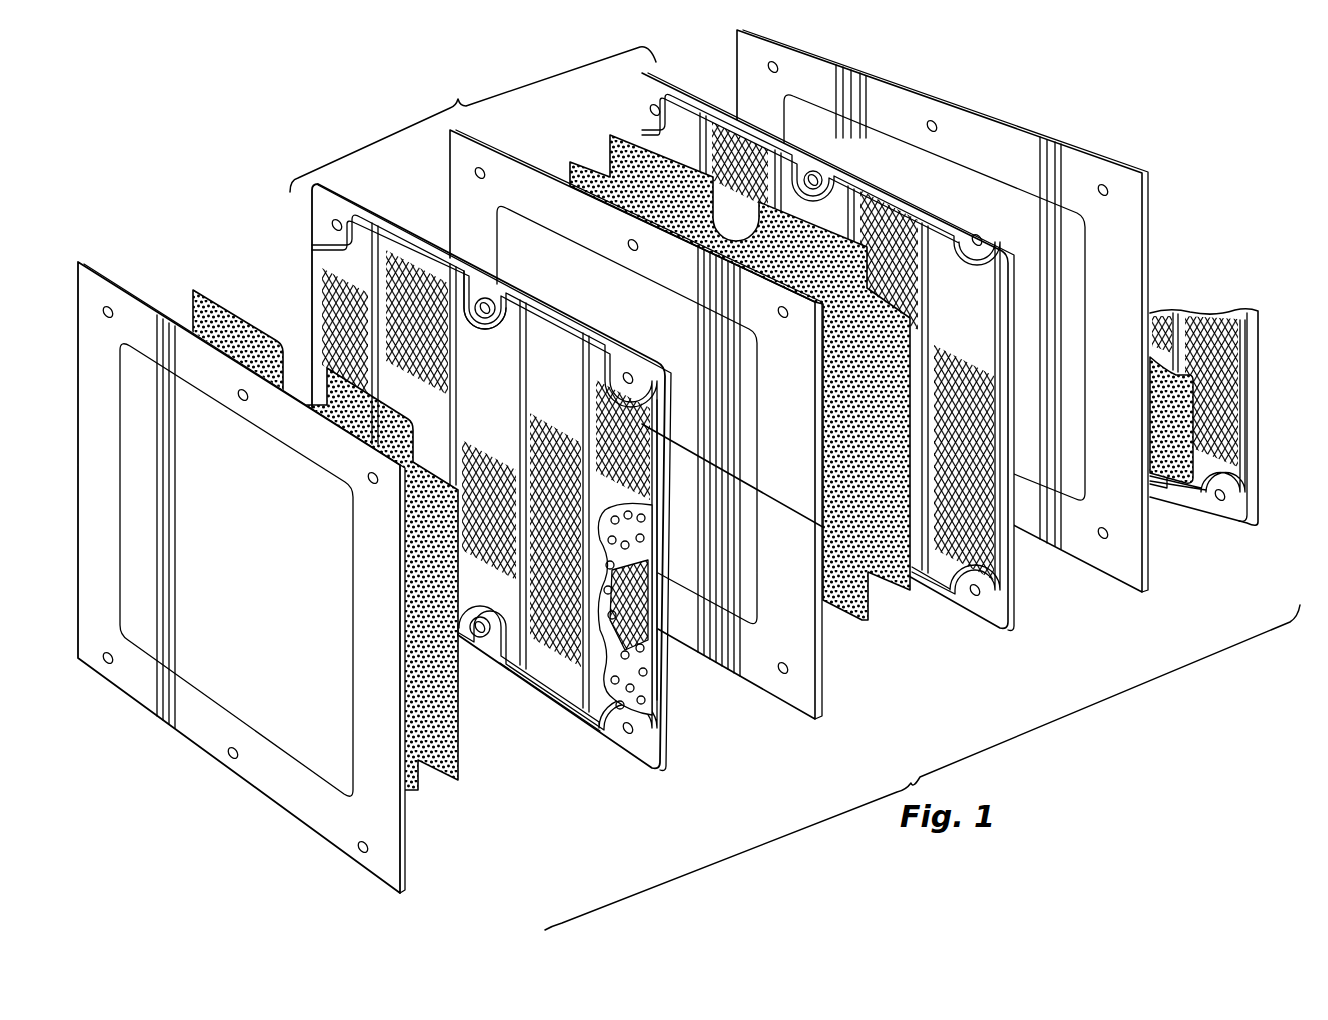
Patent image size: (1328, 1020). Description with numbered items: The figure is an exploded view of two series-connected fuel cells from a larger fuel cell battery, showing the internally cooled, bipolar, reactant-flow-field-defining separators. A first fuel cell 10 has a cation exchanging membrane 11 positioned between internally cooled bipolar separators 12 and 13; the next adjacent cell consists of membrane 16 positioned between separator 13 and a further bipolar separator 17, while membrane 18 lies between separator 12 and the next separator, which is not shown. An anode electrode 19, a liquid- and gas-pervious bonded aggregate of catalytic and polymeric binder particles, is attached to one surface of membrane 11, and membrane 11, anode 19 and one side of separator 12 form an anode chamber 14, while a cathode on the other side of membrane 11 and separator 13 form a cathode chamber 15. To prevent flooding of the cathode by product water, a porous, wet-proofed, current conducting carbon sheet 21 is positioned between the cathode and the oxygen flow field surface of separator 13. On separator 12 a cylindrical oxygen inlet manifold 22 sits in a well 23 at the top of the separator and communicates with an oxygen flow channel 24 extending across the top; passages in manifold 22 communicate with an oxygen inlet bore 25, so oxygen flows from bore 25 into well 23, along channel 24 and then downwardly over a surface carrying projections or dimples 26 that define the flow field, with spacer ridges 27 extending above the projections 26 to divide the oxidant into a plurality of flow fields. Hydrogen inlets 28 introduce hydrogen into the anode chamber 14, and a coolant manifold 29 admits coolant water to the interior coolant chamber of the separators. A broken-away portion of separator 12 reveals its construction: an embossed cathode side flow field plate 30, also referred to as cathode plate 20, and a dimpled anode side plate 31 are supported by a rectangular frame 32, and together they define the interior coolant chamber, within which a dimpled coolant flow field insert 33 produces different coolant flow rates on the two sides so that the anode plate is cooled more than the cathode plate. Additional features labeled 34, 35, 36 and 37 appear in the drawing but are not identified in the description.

The first fuel cell 10 is at (691, 480).
The cation exchanging membrane 11 is at (506, 155).
The internally cooled bipolar separator 12 is at (640, 765).
The internally cooled bipolar separator 13 is at (1010, 628).
The anode chamber 14 is at (741, 717).
The cathode chamber 15 is at (898, 618).
The membrane 16 is at (1130, 232).
The bipolar separator 17 is at (1256, 447).
The membrane 18 is at (394, 836).
The anode electrode 19 is at (650, 295).
The cathode plate 20 is at (1085, 300).
The porous wet-proofed current conducting carbon sheet 21 is at (238, 333).
The cylindrical oxygen inlet manifold 22 is at (490, 298).
The well 23 is at (492, 318).
The oxygen flow channel 24 is at (578, 343).
The oxygen inlet bore 25 is at (507, 318).
The projections or dimples 26 is at (636, 440).
The spacer ridges 27 is at (518, 580).
The hydrogen inlets 28 is at (330, 226).
The coolant inlet manifold 29 is at (633, 370).
The embossed cathode side flow field plate 30 is at (650, 497).
The dimpled or embossed anode side plate 31 is at (645, 606).
The rectangular frame 32 is at (655, 577).
The dimpled coolant flow field insert 33 is at (650, 683).
The lower bolt hole 34 is at (640, 732).
The lower bolt hole 35 is at (495, 640).
The lower plate corner 36 is at (485, 655).
The lower plate edge 37 is at (545, 698).